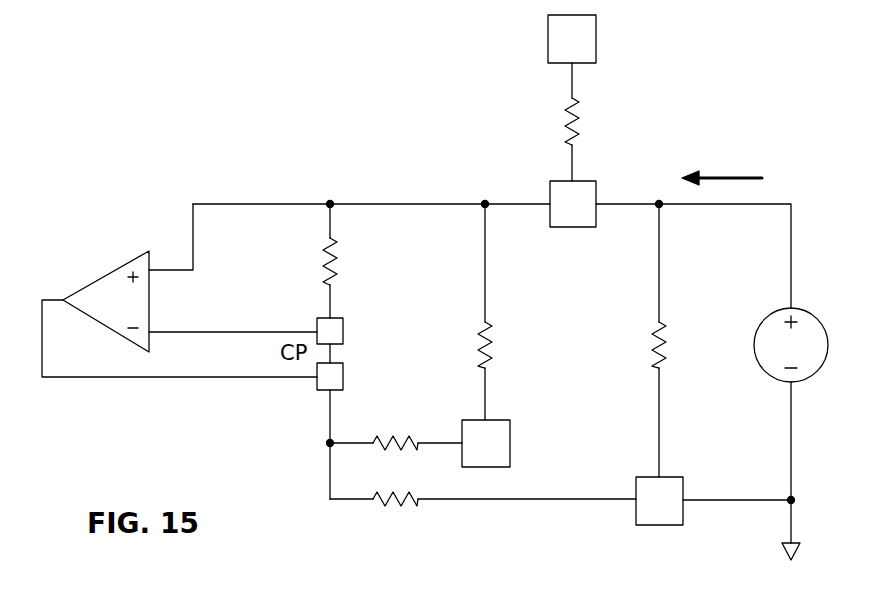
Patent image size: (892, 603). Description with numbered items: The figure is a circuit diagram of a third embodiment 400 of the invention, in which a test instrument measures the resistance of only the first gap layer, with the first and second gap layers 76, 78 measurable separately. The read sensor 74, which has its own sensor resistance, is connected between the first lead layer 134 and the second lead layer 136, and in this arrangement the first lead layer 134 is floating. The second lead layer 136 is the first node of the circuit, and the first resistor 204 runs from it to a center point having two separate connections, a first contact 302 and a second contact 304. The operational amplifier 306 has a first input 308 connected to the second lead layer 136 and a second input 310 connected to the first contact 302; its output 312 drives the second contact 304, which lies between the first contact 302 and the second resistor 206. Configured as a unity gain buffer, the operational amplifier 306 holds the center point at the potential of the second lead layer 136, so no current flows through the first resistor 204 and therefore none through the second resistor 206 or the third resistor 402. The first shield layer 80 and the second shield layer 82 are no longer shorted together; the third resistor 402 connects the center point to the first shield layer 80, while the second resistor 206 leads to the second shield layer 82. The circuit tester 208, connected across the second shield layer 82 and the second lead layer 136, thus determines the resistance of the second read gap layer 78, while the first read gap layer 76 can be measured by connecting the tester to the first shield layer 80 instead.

The first lead layer 134 is at (548, 33).
The read sensor 74 is at (565, 124).
The second lead layer 136 is at (549, 186).
The third embodiment 400 is at (688, 82).
The operational amplifier 306 is at (108, 272).
The first input 308 is at (150, 268).
The output 312 is at (63, 300).
The second input 310 is at (152, 331).
The first resistor 204 is at (325, 266).
The first contact 302 is at (343, 330).
The second contact 304 is at (343, 378).
The first read gap layer 76 is at (480, 345).
The second read gap layer 78 is at (655, 345).
The first shield layer 80 is at (510, 436).
The second shield layer 82 is at (642, 478).
The circuit tester 208 is at (775, 378).
The third resistor 402 is at (373, 447).
The second resistor 206 is at (373, 503).